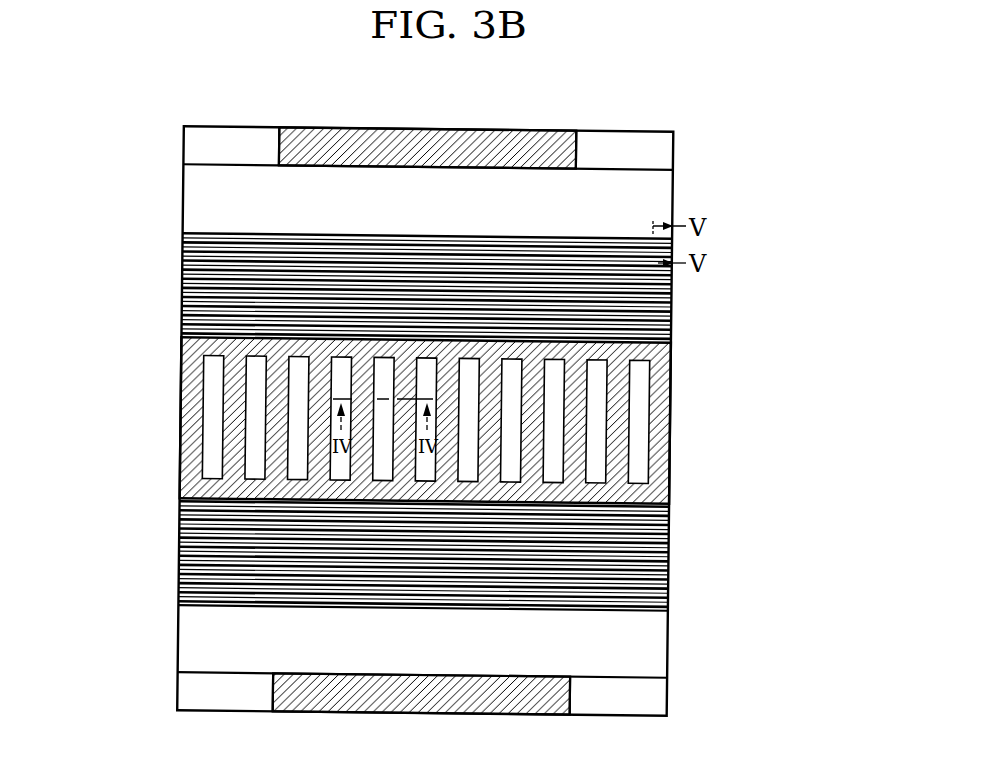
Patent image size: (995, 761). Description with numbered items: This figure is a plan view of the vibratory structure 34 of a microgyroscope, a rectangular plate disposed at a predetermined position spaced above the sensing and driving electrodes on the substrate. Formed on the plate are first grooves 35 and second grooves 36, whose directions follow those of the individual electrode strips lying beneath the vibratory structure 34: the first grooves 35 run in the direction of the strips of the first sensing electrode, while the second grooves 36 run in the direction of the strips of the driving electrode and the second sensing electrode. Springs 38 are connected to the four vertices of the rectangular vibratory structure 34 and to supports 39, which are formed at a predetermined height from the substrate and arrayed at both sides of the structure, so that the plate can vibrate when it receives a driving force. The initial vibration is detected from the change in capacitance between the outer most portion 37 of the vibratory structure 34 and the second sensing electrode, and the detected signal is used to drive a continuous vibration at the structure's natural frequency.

The vibratory structure 34 is at (128, 312).
The first grooves 35 is at (463, 236).
The second grooves 36 is at (640, 472).
The outer most portion 37 is at (182, 422).
The springs 38 is at (240, 124).
The supports 39 is at (567, 123).